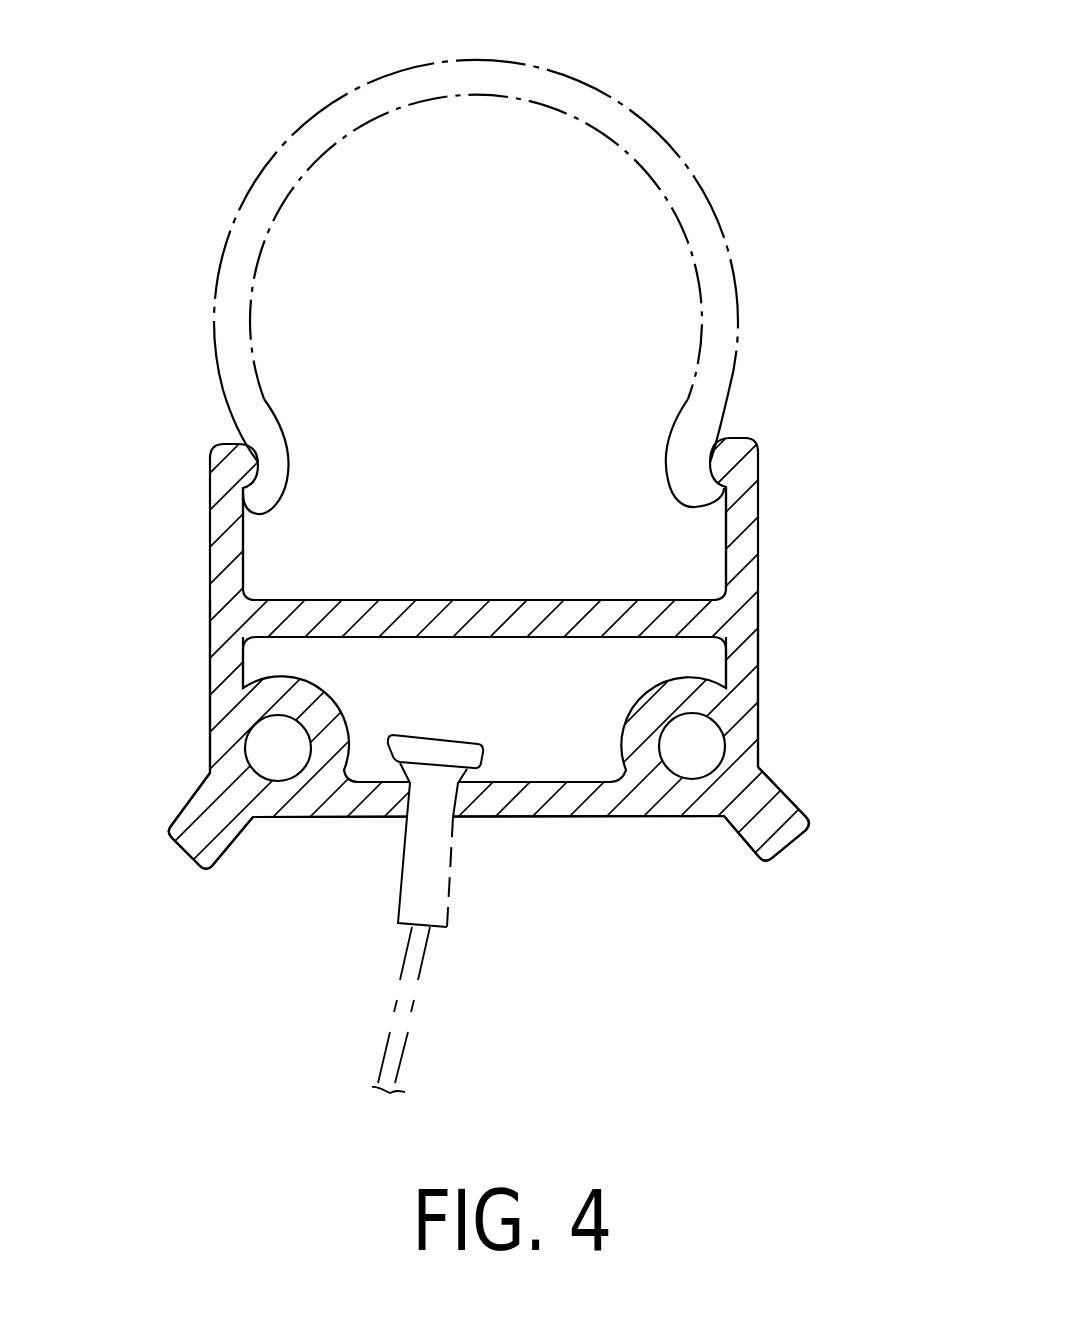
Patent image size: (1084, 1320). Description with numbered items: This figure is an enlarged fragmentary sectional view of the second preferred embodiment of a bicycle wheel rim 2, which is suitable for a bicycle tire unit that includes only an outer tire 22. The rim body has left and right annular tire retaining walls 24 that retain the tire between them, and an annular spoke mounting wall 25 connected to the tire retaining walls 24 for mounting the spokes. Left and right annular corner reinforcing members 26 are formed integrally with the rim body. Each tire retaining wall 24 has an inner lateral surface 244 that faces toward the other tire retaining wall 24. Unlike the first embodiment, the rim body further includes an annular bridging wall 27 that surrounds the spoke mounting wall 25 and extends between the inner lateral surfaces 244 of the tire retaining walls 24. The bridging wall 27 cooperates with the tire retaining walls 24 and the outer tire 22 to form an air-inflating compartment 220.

The bicycle wheel rim 2 is at (773, 555).
The outer tire 22 is at (728, 293).
The air-inflating compartment 220 is at (512, 178).
The tire retaining wall 24 is at (230, 680).
The inner lateral surface 244 is at (243, 530).
The spoke mounting wall 25 is at (643, 793).
The annular corner reinforcing member 26 is at (200, 833).
The bridging wall 27 is at (597, 630).